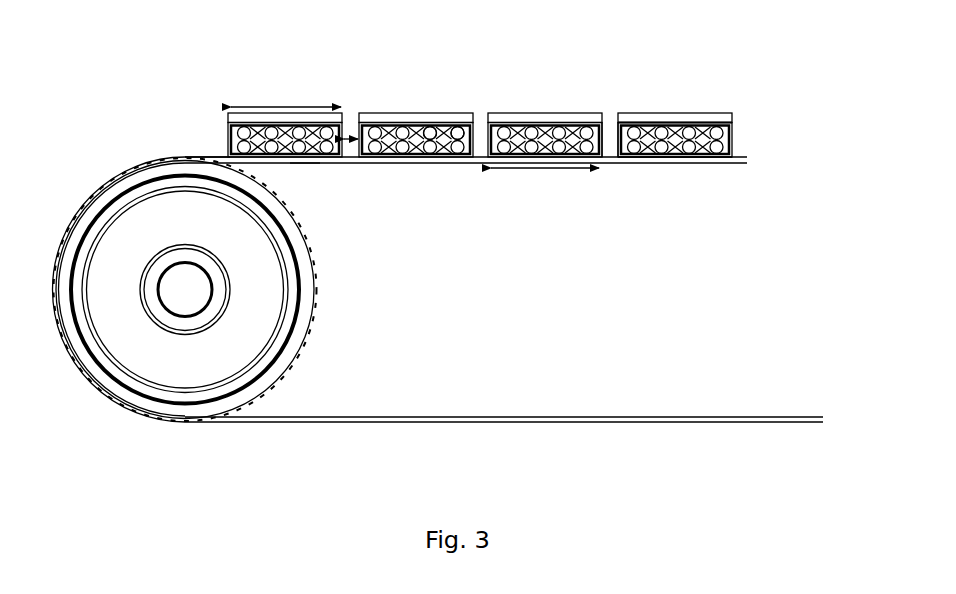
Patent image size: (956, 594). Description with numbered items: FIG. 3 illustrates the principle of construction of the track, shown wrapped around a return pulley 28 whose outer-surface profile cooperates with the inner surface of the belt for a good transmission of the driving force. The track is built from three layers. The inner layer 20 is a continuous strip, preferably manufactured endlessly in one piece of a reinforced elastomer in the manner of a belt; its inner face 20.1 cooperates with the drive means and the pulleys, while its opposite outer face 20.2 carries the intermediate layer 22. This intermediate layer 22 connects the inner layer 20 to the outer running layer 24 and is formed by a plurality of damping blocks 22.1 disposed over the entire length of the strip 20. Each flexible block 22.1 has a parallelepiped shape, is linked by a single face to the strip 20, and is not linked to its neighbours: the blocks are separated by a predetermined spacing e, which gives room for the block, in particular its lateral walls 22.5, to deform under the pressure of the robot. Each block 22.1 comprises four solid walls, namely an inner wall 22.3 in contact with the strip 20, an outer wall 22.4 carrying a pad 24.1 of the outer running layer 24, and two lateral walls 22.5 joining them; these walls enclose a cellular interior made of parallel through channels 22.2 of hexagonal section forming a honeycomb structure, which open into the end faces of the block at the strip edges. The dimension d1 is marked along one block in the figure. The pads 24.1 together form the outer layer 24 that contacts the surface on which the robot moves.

The inner layer 20 is at (738, 163).
The inner face 20.1 is at (215, 157).
The outer face 20.2 is at (302, 164).
The intermediate layer 22 is at (736, 138).
The damping block 22.1 is at (417, 164).
The through channel 22.2 is at (458, 128).
The inner wall 22.3 is at (627, 155).
The outer wall 22.4 is at (665, 122).
The lateral wall 22.5 is at (614, 120).
The outer running layer 24 is at (735, 117).
The pad 24.1 is at (693, 120).
The return pulley 28 is at (187, 358).
The predetermined spacing e is at (350, 136).
The module length d1 is at (545, 183).